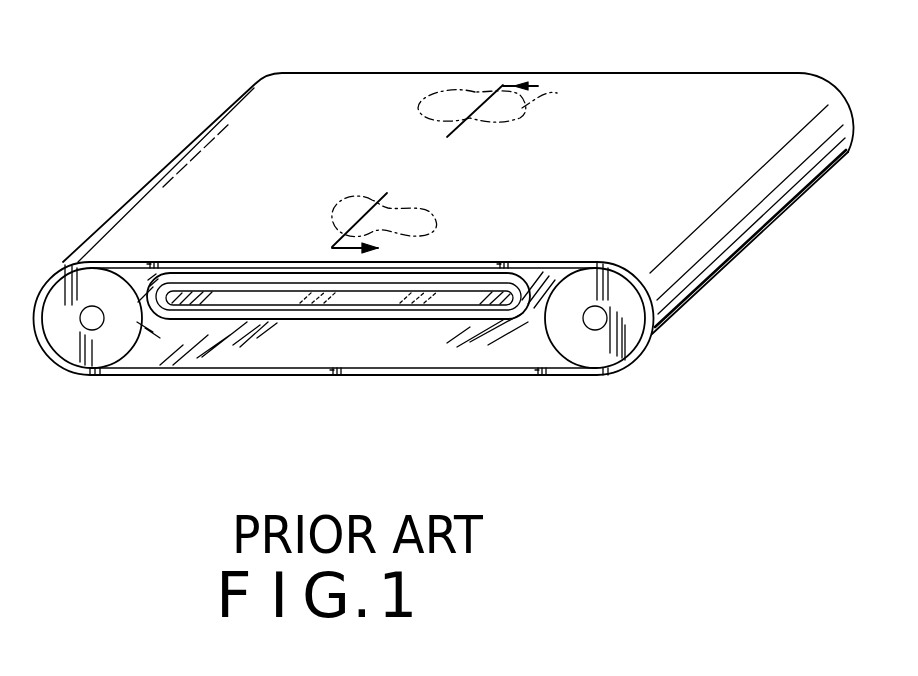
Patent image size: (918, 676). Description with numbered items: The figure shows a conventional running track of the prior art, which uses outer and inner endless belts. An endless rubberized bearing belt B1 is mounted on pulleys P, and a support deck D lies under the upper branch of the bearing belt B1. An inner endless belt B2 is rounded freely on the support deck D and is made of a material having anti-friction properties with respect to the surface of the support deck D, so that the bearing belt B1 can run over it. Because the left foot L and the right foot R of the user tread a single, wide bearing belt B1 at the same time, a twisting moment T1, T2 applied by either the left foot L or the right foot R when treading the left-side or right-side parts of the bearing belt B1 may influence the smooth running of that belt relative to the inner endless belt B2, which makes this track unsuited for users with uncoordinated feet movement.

The bearing belt B1 is at (145, 262).
The inner endless belt B2 is at (536, 288).
The pulleys P is at (113, 335).
The support deck D is at (296, 293).
The left foot L is at (405, 225).
The twisting moment T1 is at (343, 248).
The twisting moment T2 is at (513, 82).
The right foot R is at (556, 94).